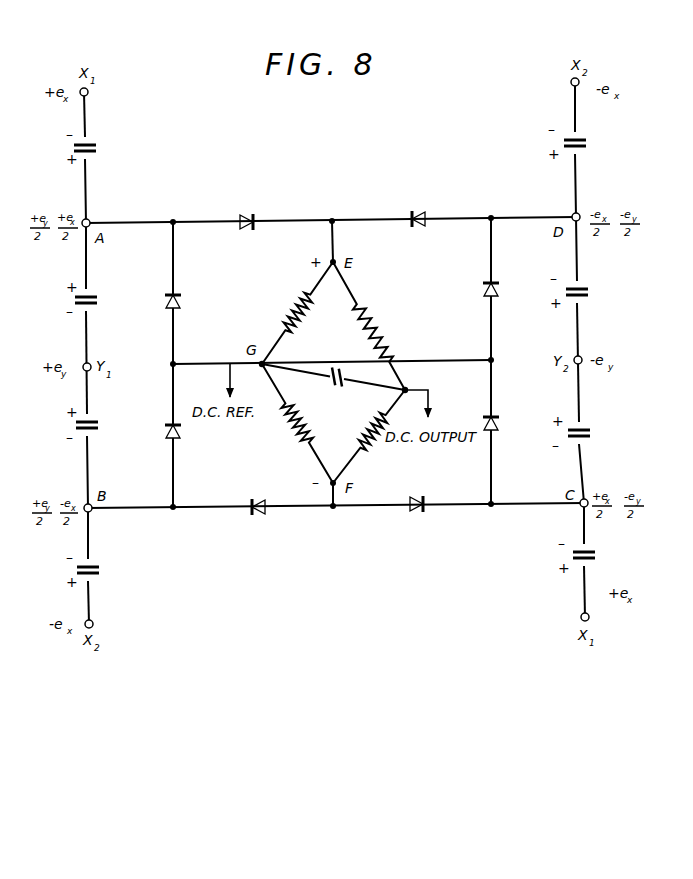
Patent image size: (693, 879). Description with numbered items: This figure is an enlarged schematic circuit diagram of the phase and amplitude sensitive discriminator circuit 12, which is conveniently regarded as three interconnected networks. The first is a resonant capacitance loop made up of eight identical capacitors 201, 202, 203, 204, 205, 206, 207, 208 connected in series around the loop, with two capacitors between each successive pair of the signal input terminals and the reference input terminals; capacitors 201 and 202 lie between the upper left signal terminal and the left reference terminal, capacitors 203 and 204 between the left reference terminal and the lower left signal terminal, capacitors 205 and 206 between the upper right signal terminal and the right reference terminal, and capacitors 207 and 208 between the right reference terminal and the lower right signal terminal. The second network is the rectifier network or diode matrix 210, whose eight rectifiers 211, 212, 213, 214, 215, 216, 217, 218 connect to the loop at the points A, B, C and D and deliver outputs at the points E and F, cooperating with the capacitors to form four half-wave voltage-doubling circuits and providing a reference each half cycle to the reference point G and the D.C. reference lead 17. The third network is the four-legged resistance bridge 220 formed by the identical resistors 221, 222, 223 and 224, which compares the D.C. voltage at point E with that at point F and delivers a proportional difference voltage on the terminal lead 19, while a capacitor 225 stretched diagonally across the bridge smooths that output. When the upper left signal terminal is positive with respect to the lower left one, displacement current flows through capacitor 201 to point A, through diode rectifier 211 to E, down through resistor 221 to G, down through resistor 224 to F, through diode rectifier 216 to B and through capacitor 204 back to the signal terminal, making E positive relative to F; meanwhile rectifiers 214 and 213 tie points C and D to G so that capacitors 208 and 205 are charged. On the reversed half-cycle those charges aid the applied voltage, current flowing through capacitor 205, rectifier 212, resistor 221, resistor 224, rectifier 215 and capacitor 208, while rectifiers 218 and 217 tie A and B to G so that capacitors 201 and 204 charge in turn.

The phase and amplitude sensitive discriminator circuit 12 is at (341, 193).
The D.C. reference lead 17 is at (226, 388).
The terminal lead 19 is at (432, 407).
The capacitor 201 is at (98, 148).
The capacitor 202 is at (99, 301).
The capacitor 203 is at (100, 425).
The capacitor 204 is at (100, 571).
The capacitor 205 is at (588, 146).
The capacitor 206 is at (590, 295).
The capacitor 207 is at (592, 436).
The capacitor 208 is at (604, 557).
The rectifier network 210 is at (235, 214).
The diode rectifier 211 is at (246, 213).
The rectifier 212 is at (420, 211).
The rectifier 213 is at (499, 291).
The rectifier 214 is at (499, 421).
The rectifier 215 is at (420, 514).
The diode rectifier 216 is at (254, 517).
The rectifier 217 is at (181, 430).
The rectifier 218 is at (181, 300).
The four-legged resistance bridge 220 is at (345, 340).
The resistor 221 is at (286, 322).
The resistor 222 is at (372, 320).
The resistor 223 is at (358, 444).
The resistor 224 is at (292, 432).
The capacitor 225 is at (336, 388).